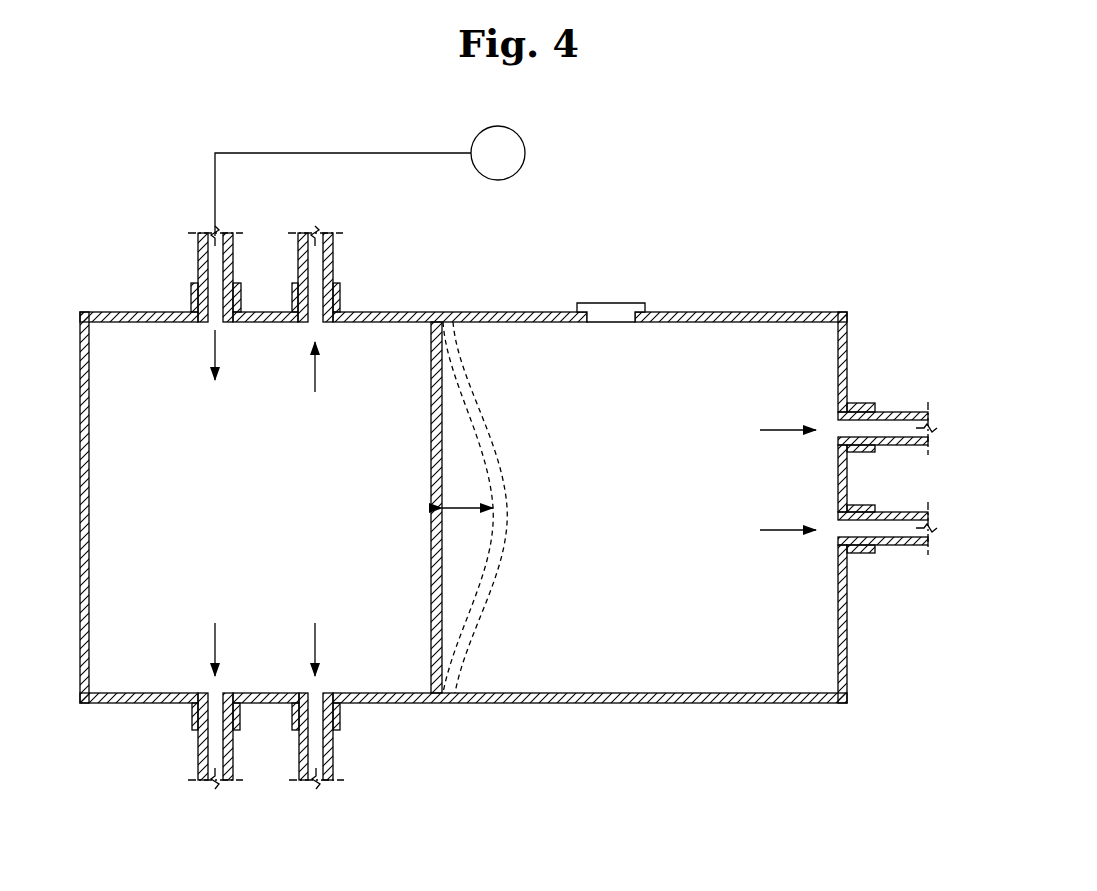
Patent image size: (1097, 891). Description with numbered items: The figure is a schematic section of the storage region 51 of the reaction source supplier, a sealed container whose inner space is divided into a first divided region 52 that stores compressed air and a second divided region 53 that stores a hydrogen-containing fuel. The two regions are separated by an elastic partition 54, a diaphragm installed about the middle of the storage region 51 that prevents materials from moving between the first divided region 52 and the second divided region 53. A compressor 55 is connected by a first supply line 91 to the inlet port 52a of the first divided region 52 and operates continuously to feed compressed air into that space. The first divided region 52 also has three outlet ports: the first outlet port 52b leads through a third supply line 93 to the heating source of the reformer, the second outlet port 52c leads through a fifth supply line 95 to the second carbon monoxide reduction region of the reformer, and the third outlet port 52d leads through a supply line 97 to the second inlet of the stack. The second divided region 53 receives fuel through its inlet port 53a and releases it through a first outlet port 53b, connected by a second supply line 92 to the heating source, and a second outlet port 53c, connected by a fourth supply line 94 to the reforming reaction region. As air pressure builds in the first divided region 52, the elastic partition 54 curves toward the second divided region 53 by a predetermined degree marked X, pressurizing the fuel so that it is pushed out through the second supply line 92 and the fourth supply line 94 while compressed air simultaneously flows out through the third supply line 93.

The storage region 51 is at (84, 312).
The first divided region 52 is at (282, 507).
The inlet port 52a is at (191, 292).
The first outlet port 52b is at (340, 716).
The second outlet port 52c is at (192, 716).
The third outlet port 52d is at (341, 292).
The second divided region 53 is at (642, 507).
The inlet port 53a is at (620, 322).
The first outlet port 53b is at (868, 403).
The second outlet port 53c is at (866, 553).
The elastic partition 54 is at (431, 350).
The compressor 55 is at (525, 155).
The first supply line 91 is at (198, 250).
The second supply line 92 is at (905, 412).
The third supply line 93 is at (333, 762).
The fourth supply line 94 is at (905, 545).
The fifth supply line 95 is at (198, 762).
The supply line 97 is at (333, 250).